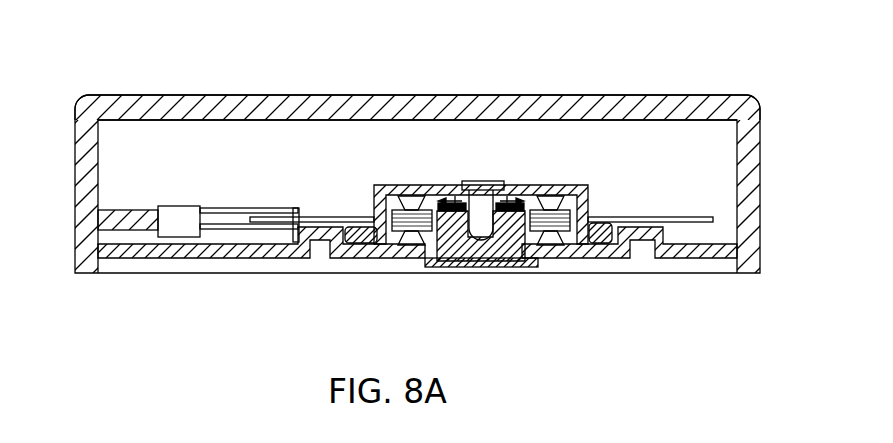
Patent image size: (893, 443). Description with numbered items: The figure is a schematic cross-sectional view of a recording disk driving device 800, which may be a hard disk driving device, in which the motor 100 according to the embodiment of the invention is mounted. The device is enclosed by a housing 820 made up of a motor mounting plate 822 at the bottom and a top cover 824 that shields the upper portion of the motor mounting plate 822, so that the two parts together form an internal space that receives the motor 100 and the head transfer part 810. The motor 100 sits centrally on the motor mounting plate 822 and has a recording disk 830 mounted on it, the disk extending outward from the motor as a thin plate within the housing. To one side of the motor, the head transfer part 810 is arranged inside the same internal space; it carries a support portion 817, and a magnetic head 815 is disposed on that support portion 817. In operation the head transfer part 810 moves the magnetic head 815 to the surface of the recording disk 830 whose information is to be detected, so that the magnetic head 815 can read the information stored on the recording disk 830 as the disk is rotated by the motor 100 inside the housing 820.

The recording disk driving device 800 is at (437, 30).
The housing 820 is at (72, 172).
The motor mounting plate 822 is at (752, 252).
The top cover 824 is at (240, 108).
The head transfer part 810 is at (178, 247).
The support portion 817 is at (245, 232).
The magnetic head 815 is at (300, 245).
The recording disk 830 is at (668, 218).
The motor 100 is at (507, 167).